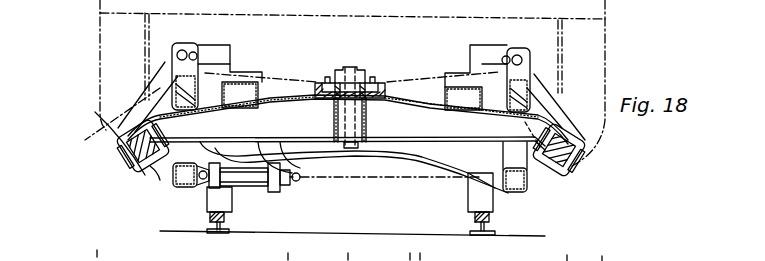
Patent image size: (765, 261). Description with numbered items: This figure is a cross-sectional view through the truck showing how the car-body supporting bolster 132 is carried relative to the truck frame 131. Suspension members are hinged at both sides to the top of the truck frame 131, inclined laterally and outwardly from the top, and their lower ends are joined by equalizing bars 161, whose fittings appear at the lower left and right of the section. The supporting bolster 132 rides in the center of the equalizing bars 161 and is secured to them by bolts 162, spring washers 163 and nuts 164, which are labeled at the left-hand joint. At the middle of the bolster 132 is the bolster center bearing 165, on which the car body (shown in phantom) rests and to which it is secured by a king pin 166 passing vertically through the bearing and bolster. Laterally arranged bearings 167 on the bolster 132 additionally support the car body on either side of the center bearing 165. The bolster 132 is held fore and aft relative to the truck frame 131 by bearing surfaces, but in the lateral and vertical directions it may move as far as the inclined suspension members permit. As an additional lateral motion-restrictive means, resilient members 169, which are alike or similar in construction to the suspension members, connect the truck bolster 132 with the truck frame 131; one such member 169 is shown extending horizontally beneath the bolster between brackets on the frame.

The truck frame 131 is at (527, 192).
The supporting bolster 132 is at (312, 94).
The equalizing bars 161 is at (121, 139).
The bolts 162 is at (123, 145).
The spring washers 163 is at (143, 173).
The nuts 164 is at (157, 178).
The bolster center bearing 165 is at (333, 80).
The king pin 166 is at (356, 66).
The laterally arranged bearings 167 is at (249, 94).
The resilient members 169 is at (262, 192).